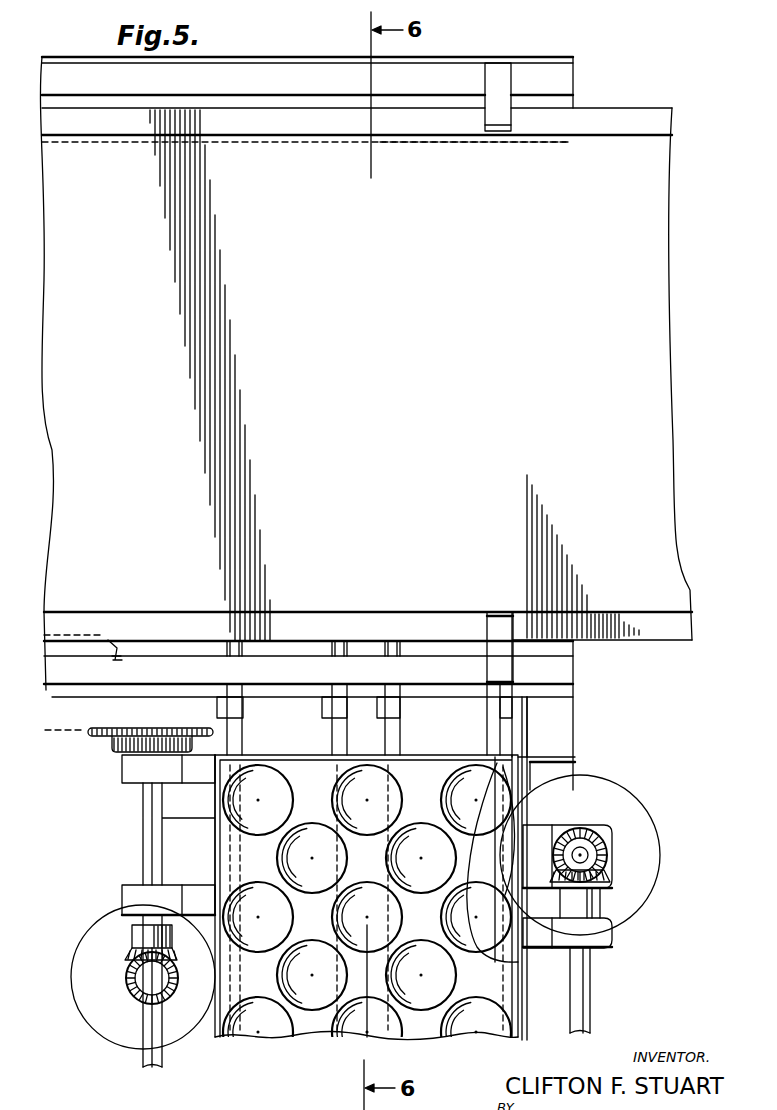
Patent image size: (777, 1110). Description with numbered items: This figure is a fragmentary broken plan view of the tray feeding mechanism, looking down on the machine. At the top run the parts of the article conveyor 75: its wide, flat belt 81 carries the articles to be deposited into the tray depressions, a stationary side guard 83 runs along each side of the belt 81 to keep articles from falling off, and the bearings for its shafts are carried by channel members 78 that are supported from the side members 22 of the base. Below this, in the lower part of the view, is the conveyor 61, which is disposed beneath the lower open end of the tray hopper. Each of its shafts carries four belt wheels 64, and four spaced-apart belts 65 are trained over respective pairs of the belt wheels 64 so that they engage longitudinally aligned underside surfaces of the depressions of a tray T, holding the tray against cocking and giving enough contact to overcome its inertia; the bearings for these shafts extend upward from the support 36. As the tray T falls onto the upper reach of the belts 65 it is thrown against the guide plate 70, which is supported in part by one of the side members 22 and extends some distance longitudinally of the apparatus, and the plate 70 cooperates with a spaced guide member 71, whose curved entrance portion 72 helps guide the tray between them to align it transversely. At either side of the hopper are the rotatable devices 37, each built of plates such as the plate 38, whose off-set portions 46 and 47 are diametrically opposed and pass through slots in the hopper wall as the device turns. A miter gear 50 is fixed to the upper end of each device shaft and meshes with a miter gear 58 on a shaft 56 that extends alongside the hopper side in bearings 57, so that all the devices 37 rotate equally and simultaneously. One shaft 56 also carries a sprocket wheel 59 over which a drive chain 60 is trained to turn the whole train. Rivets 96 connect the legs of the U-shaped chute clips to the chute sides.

The side member 22 is at (550, 55).
The support 36 is at (178, 708).
The device 37 is at (89, 924).
The plate 38 is at (88, 986).
The off-set portion 46 is at (80, 1013).
The off-set portion 47 is at (207, 927).
The miter gear 50 is at (632, 782).
The shaft 56 is at (153, 1035).
The bearing 57 is at (135, 769).
The miter gear 58 is at (143, 935).
The sprocket wheel 59 is at (98, 738).
The chain 60 is at (57, 735).
The conveyor 61 is at (530, 732).
The belt wheel 64 is at (330, 711).
The belt 65 is at (337, 738).
The guide plate 70 is at (397, 143).
The guide member 71 is at (60, 633).
The curved entrance portion 72 is at (115, 640).
The conveyor 75 is at (667, 216).
The channel member 78 is at (468, 63).
The belt 81 is at (645, 333).
The side guard 83 is at (623, 137).
The rivet 96 is at (560, 705).
The tray T is at (366, 911).